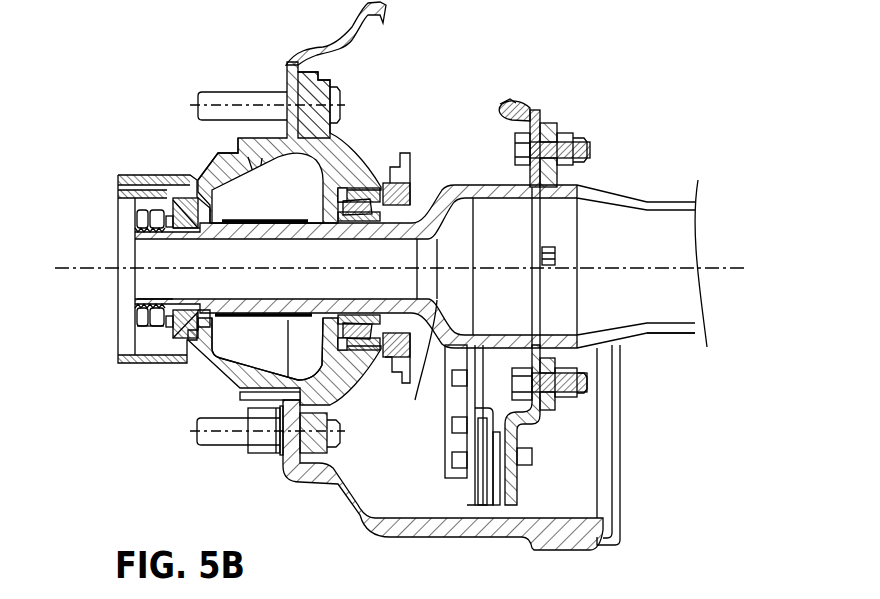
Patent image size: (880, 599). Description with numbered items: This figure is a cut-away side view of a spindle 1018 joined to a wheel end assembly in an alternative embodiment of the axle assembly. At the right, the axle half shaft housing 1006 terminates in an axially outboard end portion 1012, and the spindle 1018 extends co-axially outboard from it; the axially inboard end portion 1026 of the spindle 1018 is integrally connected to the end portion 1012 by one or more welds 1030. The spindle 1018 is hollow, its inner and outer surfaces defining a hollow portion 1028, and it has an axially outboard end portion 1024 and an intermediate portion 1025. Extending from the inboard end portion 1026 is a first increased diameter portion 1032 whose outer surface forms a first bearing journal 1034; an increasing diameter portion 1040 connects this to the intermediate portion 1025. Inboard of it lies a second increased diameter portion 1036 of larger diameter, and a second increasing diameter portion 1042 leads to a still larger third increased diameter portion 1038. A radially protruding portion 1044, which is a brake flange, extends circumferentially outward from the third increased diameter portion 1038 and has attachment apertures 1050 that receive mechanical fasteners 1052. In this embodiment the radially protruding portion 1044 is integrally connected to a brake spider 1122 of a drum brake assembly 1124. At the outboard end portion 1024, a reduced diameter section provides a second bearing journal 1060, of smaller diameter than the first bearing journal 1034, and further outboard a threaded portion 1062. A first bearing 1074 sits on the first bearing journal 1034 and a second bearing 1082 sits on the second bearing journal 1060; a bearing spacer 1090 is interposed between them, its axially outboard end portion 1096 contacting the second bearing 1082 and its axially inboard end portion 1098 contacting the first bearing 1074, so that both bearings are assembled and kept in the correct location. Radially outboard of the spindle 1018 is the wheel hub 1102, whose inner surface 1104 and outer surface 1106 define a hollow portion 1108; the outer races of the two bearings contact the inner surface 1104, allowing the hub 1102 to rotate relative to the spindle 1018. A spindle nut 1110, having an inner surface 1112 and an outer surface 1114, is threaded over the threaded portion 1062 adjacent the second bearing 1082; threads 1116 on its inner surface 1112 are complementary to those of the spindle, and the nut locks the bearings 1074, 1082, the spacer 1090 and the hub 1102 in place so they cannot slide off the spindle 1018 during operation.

The axle half shaft housing 1006 is at (673, 196).
The axially outboard end portion 1012 is at (678, 345).
The spindle 1018 is at (264, 240).
The axially outboard end portion 1024 is at (173, 310).
The intermediate portion 1025 is at (312, 298).
The axially inboard end portion 1026 is at (470, 330).
The hollow portion 1028 is at (160, 247).
The weld 1030 is at (579, 308).
The first increased diameter portion 1032 is at (368, 226).
The first bearing journal 1034 is at (347, 316).
The second increased diameter portion 1036 is at (393, 384).
The third increased diameter portion 1038 is at (478, 185).
The increasing diameter portion 1040 is at (324, 228).
The second increasing diameter portion 1042 is at (413, 347).
The radially protruding portion 1044 is at (545, 122).
The attachment aperture 1050 is at (545, 124).
The mechanical fastener 1052 is at (588, 152).
The second bearing journal 1060 is at (190, 236).
The threaded portion 1062 is at (137, 305).
The first bearing 1074 is at (375, 170).
The second bearing 1082 is at (184, 203).
The bearing spacer 1090 is at (252, 318).
The axially outboard end portion 1096 is at (250, 222).
The axially inboard end portion 1098 is at (345, 150).
The wheel hub 1102 is at (208, 385).
The inner surface 1104 is at (258, 187).
The outer surface 1106 is at (223, 150).
The hollow portion 1108 is at (322, 360).
The spindle nut 1110 is at (140, 318).
The inner surface 1112 is at (152, 300).
The outer surface 1114 is at (140, 333).
The threads 1116 is at (140, 232).
The brake spider 1122 is at (518, 491).
The drum brake assembly 1124 is at (328, 512).